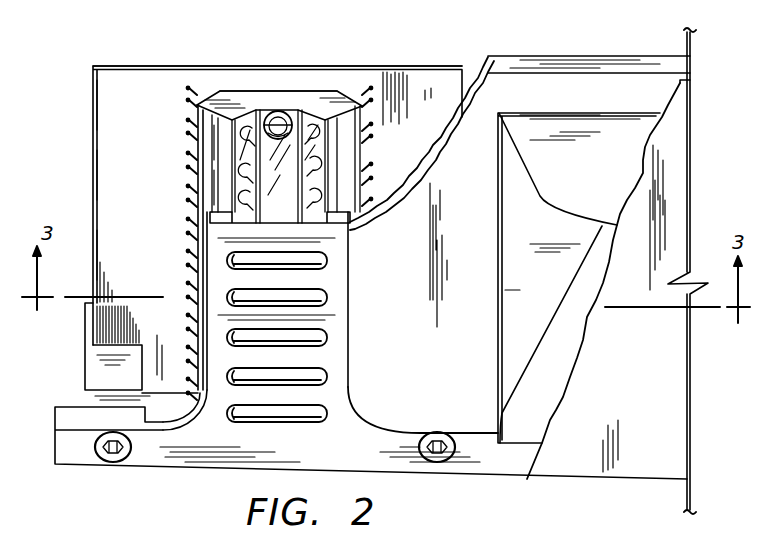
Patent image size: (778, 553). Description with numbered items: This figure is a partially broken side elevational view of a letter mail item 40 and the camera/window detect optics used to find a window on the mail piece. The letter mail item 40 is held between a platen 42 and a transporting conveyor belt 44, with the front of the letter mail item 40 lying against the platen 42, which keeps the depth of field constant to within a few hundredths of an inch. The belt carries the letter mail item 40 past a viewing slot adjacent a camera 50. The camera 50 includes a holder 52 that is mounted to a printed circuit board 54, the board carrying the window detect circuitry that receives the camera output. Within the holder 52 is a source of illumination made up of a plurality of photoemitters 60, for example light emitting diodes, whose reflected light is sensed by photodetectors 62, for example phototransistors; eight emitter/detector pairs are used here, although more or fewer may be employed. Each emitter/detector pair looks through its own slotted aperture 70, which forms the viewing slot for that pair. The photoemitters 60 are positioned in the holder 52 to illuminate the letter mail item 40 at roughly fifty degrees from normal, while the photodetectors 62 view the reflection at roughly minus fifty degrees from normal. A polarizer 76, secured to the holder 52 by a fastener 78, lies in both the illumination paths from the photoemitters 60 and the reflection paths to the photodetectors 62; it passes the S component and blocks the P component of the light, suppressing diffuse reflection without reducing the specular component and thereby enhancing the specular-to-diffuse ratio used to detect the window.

The letter mail item 40 is at (603, 164).
The platen 42 is at (437, 369).
The transporting conveyor belt 44 is at (638, 378).
The camera 50 is at (160, 158).
The holder 52 is at (330, 110).
The printed circuit board 54 is at (447, 103).
The photoemitters 60 is at (250, 197).
The photodetectors 62 is at (315, 166).
The slotted aperture 70 is at (323, 300).
The polarizer 76 is at (257, 110).
The fastener 78 is at (292, 120).